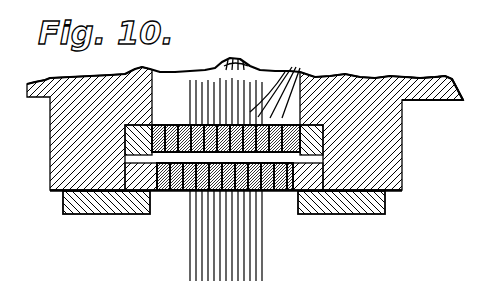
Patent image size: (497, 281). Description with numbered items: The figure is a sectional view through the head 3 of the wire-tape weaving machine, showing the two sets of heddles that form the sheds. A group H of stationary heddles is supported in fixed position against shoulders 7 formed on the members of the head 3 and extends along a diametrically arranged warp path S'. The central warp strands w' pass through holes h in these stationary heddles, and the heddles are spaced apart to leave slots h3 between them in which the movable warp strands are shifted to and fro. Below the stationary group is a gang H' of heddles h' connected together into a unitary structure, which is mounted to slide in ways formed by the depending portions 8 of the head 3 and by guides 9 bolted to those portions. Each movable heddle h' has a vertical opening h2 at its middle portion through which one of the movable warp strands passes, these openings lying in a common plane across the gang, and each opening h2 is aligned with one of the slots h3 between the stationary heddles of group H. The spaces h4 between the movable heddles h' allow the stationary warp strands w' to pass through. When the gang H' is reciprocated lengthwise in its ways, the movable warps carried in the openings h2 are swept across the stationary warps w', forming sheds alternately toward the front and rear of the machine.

The head 3 is at (450, 80).
The shoulders 7 is at (327, 93).
The depending portions 8 is at (50, 155).
The guides 9 is at (107, 214).
The holes h is at (218, 122).
The heddles h' is at (153, 207).
The vertical opening h2 is at (250, 192).
The slots h3 is at (253, 83).
The spaces h4 is at (265, 192).
The group of stationary heddles H is at (256, 139).
The gang of heddles H' is at (262, 176).
The warp path S' is at (245, 68).
The warp strands w' is at (234, 54).